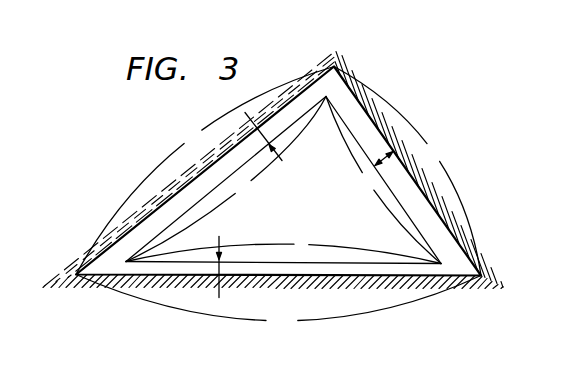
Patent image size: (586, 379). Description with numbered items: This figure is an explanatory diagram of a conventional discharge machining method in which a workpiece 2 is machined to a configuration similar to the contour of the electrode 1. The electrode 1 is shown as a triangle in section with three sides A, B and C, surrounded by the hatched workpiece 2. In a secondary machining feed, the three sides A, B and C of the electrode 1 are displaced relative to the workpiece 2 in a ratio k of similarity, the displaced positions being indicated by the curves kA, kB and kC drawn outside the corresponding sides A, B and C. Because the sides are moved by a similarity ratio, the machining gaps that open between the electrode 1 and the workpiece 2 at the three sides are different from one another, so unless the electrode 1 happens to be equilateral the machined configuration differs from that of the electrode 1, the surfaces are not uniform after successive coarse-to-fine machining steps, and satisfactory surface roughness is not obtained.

The electrode 1 is at (283, 180).
The workpiece 2 is at (443, 202).
The side A of the electrode A is at (383, 180).
The side B of the electrode B is at (226, 179).
The side C of the electrode C is at (283, 248).
The similarly displaced side A kA is at (407, 171).
The similarly displaced side B kB is at (205, 171).
The similarly displaced side C kC is at (278, 302).